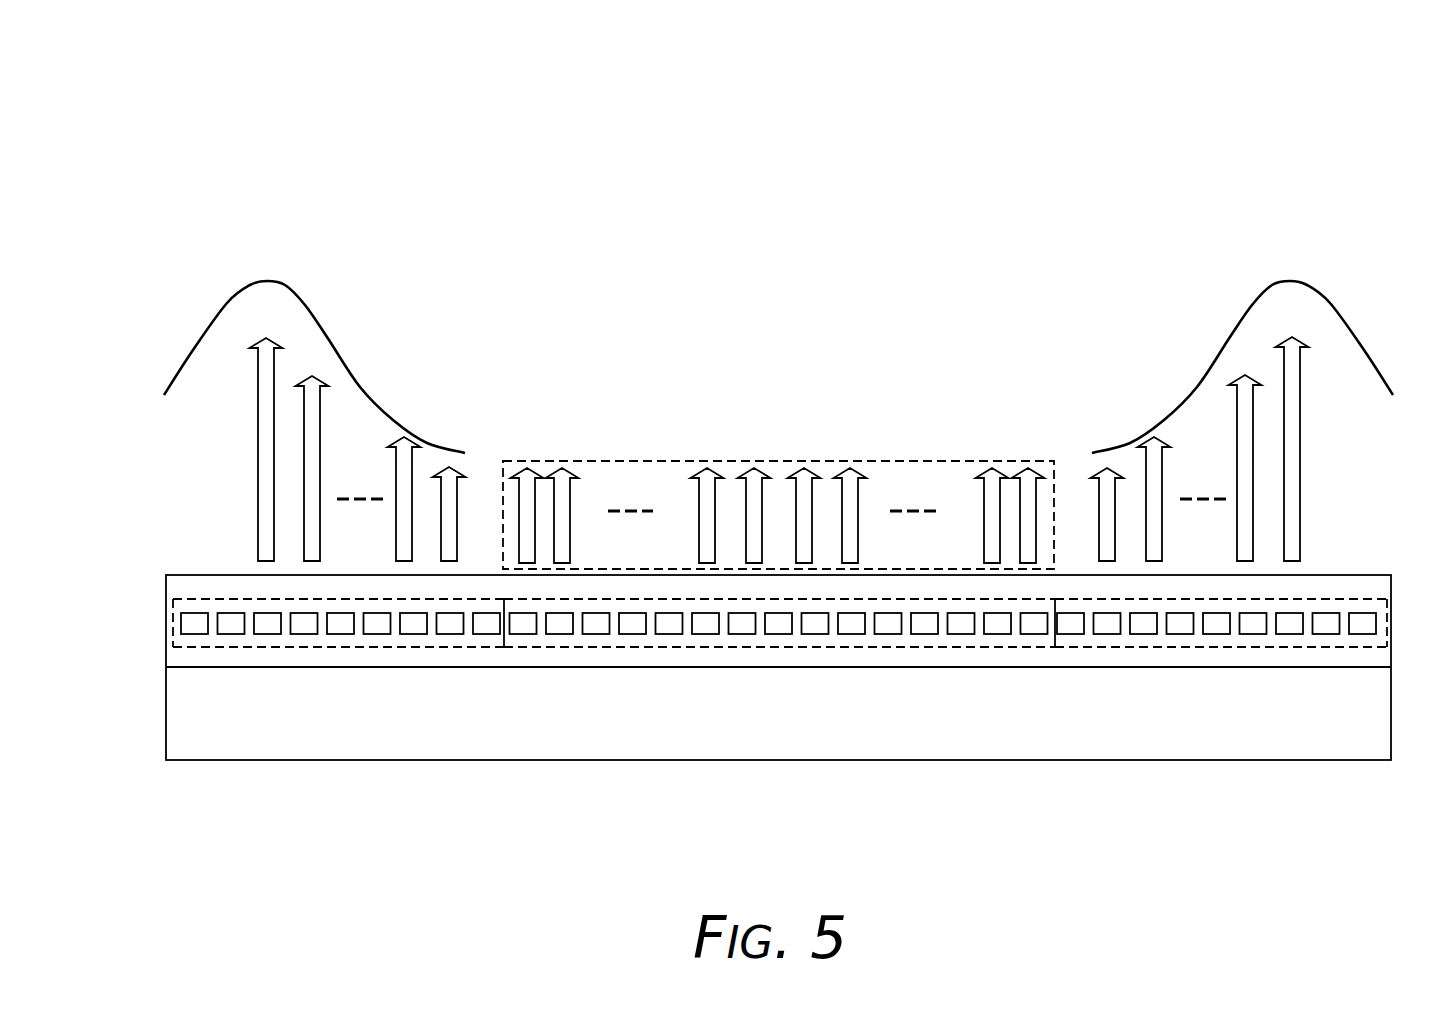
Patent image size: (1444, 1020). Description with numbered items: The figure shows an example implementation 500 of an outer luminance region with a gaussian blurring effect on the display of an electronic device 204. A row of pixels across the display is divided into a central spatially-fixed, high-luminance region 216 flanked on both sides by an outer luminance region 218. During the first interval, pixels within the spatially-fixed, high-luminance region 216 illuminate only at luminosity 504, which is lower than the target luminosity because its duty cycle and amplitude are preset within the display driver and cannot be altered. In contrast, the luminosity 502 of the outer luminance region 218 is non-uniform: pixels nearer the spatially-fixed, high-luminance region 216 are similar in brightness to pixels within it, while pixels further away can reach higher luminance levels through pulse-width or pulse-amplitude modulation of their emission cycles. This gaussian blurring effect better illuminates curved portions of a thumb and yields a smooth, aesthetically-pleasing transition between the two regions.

The example implementation 500 is at (1335, 87).
The electronic device 204 is at (148, 662).
The spatially-fixed, high-luminance region 216 is at (797, 647).
The outer luminance region 218 is at (372, 647).
The luminosity 502 is at (1160, 375).
The luminosity 504 is at (650, 461).